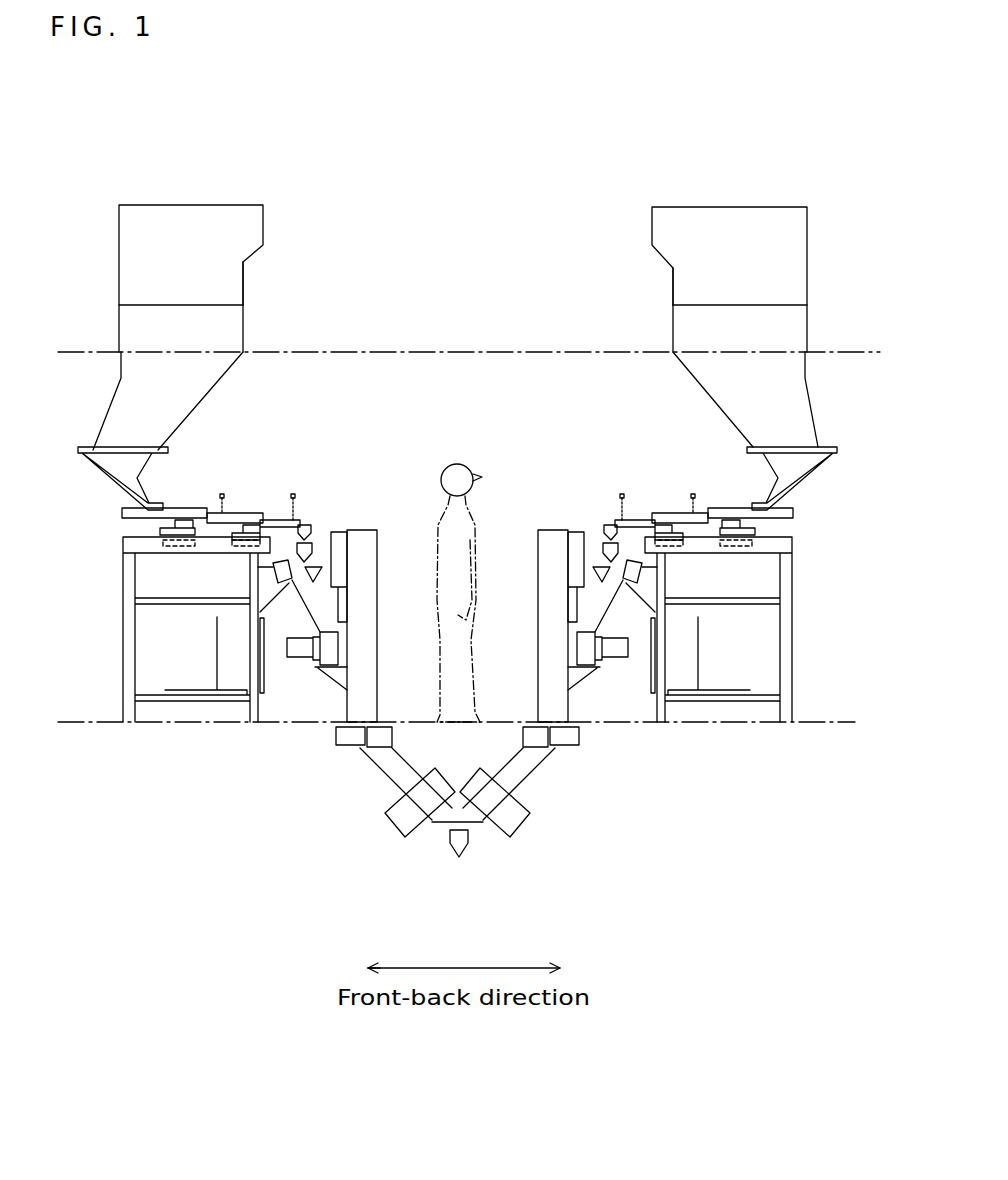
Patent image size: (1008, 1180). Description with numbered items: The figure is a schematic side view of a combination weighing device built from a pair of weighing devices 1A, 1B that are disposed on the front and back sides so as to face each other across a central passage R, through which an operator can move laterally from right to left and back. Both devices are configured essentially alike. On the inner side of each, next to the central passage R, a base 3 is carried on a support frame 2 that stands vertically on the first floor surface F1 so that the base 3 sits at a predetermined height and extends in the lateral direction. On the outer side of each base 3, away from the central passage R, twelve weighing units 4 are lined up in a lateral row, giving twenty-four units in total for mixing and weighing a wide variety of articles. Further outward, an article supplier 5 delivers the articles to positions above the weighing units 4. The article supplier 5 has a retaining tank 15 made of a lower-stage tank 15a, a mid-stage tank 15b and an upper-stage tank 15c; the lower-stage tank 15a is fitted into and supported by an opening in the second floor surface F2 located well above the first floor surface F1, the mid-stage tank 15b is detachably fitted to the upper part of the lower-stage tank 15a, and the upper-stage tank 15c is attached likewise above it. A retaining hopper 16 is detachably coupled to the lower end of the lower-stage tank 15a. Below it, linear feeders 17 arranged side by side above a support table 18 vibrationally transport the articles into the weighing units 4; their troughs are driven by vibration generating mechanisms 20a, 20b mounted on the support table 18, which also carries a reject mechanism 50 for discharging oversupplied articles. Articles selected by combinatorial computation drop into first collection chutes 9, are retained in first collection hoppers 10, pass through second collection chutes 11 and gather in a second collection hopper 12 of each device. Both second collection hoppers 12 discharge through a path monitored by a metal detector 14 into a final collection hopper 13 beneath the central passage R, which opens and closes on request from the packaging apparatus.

The weighing device 1A is at (548, 497).
The weighing device 1B is at (328, 495).
The support frame 2 is at (378, 650).
The base 3 is at (378, 540).
The weighing unit 4 is at (321, 538).
The article supplier 5 is at (240, 450).
The first collection chute 9 is at (308, 620).
The first collection hopper 10 is at (322, 650).
The second collection chute 11 is at (334, 680).
The second collection hopper 12 is at (381, 745).
The final collection hopper 13 is at (466, 835).
The metal detector 14 is at (392, 831).
The retaining tank 15 is at (117, 302).
The lower-stage tank 15a is at (112, 400).
The mid-stage tank 15b is at (245, 317).
The upper-stage tank 15c is at (245, 279).
The retaining hopper 16 is at (101, 478).
The linear feeder 17 is at (240, 509).
The support table 18 is at (122, 594).
The vibration generating mechanism 20a is at (135, 516).
The vibration generating mechanism 20b is at (230, 547).
The reject mechanism 50 is at (257, 590).
The first floor surface F1 is at (828, 722).
The second floor surface F2 is at (850, 352).
The central passage R is at (472, 593).